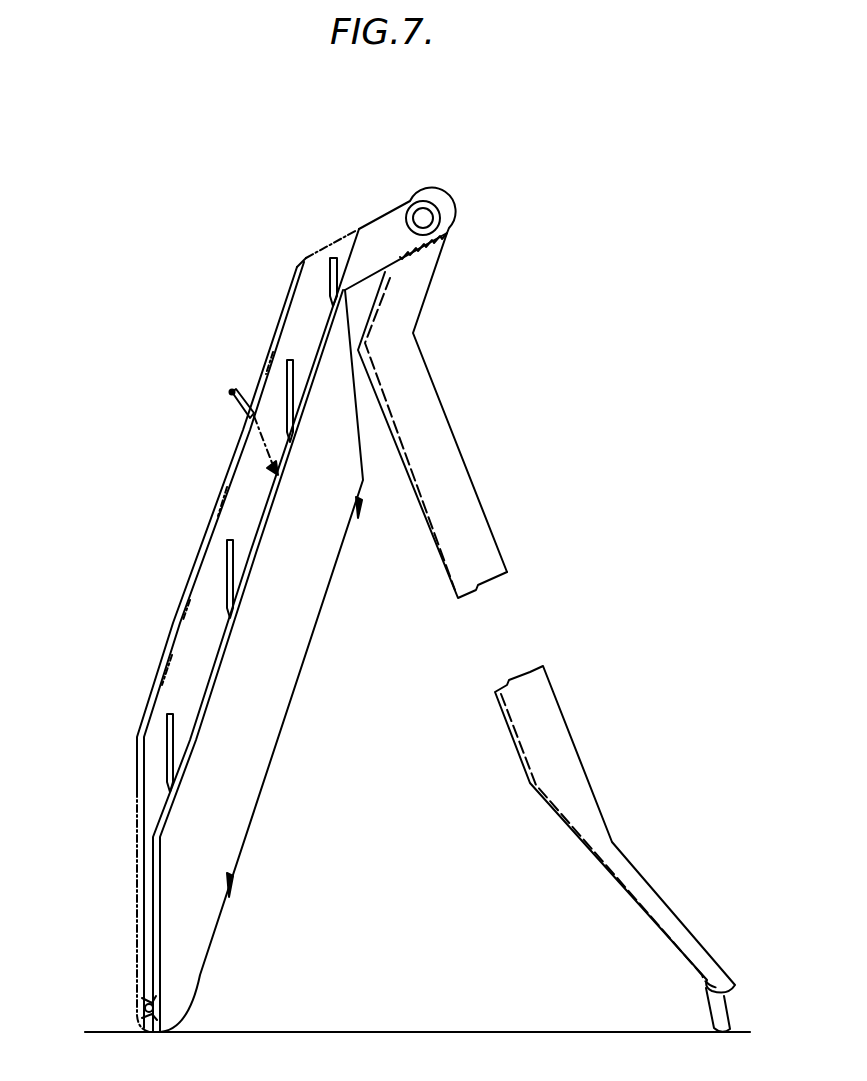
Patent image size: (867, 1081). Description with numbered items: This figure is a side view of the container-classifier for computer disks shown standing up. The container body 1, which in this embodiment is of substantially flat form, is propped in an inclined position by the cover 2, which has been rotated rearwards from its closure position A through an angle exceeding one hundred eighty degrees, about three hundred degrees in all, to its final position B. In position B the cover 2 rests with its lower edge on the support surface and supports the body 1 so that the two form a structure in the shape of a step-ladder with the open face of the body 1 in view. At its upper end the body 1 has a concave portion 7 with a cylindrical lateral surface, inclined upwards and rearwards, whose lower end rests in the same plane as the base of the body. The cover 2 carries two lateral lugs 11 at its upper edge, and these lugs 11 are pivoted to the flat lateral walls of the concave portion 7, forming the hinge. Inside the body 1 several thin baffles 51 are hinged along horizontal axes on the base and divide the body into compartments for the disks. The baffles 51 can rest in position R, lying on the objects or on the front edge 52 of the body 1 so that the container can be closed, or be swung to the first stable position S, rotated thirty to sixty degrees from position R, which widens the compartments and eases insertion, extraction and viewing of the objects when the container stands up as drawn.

The container body 1 is at (243, 840).
The cover 2 is at (180, 624).
The concave portion 7 is at (384, 215).
The lateral lugs 11 is at (433, 288).
The baffles 51 is at (347, 242).
The front edge 52 is at (270, 492).
The rest position R is at (330, 258).
The closure position A is at (287, 290).
The first stable position S is at (232, 392).
The final open position B is at (478, 494).